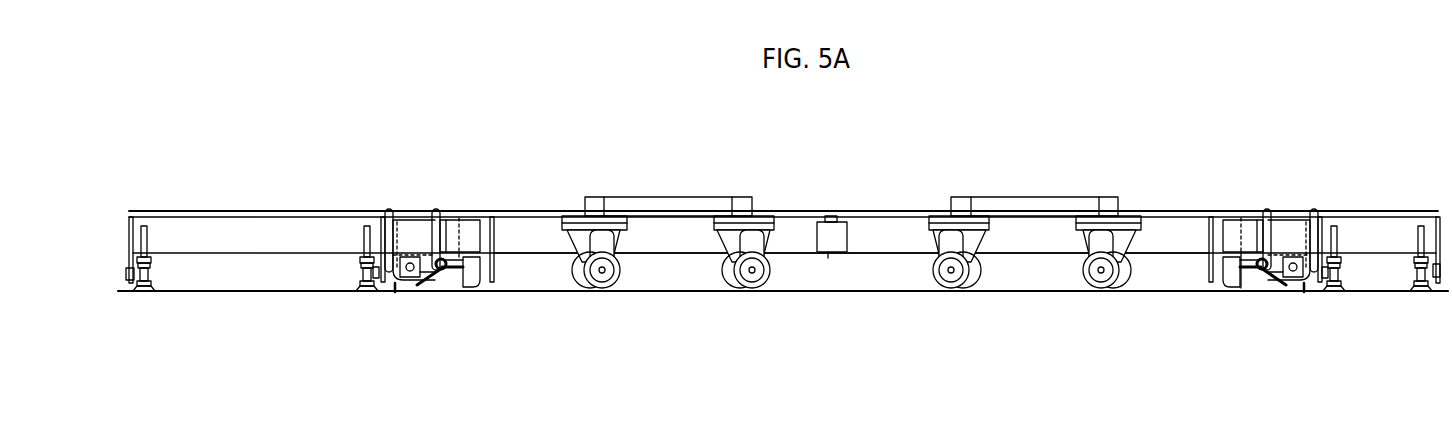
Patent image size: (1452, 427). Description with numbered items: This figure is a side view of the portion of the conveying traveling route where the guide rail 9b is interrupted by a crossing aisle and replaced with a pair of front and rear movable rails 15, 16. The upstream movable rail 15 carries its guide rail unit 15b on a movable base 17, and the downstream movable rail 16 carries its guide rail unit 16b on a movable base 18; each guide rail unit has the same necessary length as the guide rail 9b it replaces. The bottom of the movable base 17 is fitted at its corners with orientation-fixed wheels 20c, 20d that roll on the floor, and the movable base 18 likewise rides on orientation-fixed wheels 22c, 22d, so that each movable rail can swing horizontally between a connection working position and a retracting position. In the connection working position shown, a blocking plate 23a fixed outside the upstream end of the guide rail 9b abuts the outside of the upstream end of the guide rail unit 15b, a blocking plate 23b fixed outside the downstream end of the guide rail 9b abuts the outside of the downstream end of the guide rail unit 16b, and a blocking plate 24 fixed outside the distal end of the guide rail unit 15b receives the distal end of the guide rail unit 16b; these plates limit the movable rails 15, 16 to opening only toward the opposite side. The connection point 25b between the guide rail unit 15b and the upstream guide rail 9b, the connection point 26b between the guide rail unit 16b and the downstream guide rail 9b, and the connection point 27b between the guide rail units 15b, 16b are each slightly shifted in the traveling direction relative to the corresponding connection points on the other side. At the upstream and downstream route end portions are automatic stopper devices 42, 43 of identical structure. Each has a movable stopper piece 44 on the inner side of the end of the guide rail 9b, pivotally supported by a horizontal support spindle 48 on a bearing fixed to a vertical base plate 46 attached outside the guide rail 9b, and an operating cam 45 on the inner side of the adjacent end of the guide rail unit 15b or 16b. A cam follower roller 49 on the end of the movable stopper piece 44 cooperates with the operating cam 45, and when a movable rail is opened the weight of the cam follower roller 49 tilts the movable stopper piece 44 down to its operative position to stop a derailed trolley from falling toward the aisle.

The guide rail 9b is at (265, 237).
The movable rail 15 is at (910, 205).
The guide rail unit 15b is at (1040, 240).
The movable rail 16 is at (786, 205).
The guide rail unit 16b is at (667, 240).
The movable base 17 is at (1038, 207).
The movable base 18 is at (660, 207).
The orientation-fixed wheel 20c is at (1133, 272).
The orientation-fixed wheel 20d is at (960, 272).
The orientation-fixed wheel 22c is at (578, 272).
The orientation-fixed wheel 22d is at (727, 273).
The blocking plate 23a is at (1230, 237).
The blocking plate 23b is at (466, 226).
The blocking plate 24 is at (823, 226).
The connection point 25b is at (1242, 210).
The connection point 26b is at (460, 210).
The connection point 27b is at (828, 258).
The automatic stopper device 42 is at (1304, 290).
The automatic stopper device 43 is at (395, 285).
The movable stopper piece 44 is at (405, 225).
The operating cam 45 is at (441, 270).
The vertical base plate 46 is at (408, 228).
The support spindle 48 is at (410, 272).
The cam follower roller 49 is at (480, 280).